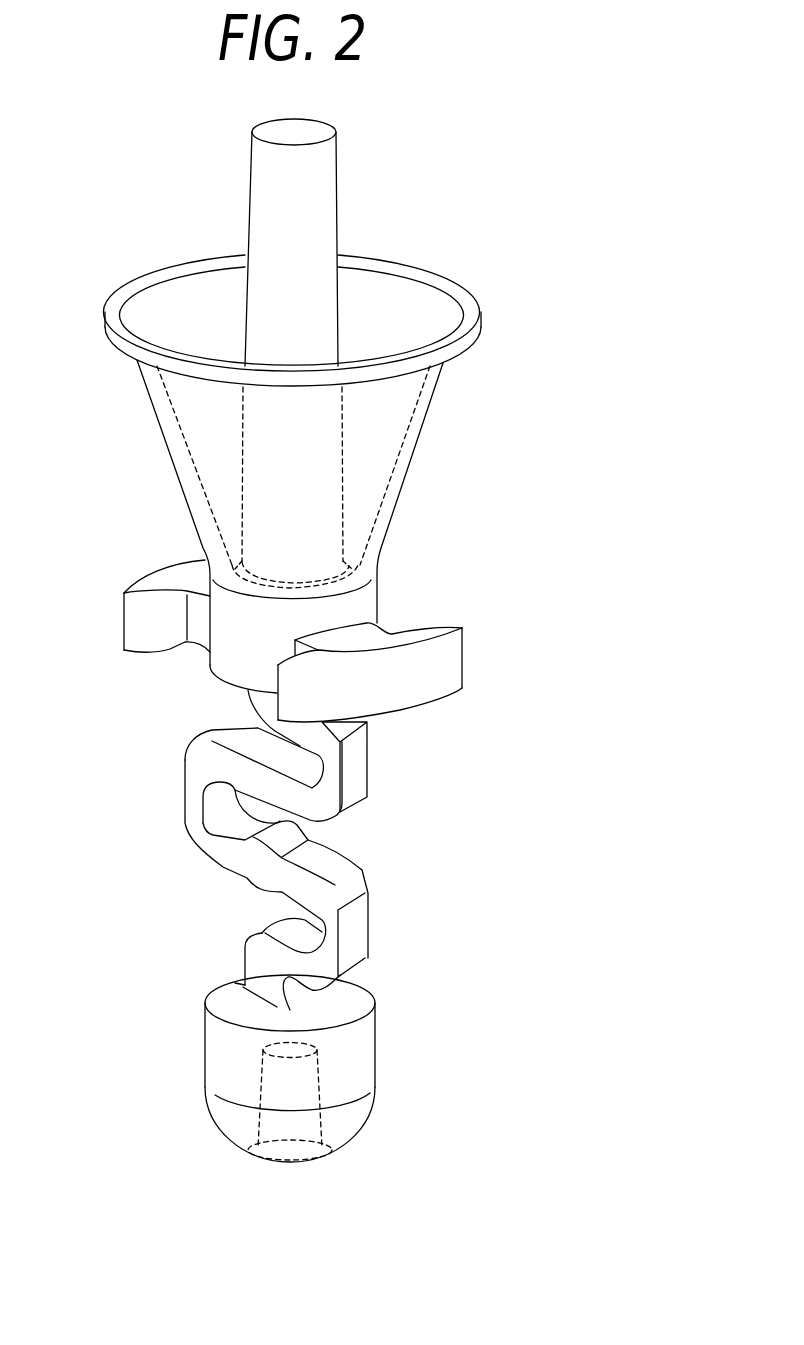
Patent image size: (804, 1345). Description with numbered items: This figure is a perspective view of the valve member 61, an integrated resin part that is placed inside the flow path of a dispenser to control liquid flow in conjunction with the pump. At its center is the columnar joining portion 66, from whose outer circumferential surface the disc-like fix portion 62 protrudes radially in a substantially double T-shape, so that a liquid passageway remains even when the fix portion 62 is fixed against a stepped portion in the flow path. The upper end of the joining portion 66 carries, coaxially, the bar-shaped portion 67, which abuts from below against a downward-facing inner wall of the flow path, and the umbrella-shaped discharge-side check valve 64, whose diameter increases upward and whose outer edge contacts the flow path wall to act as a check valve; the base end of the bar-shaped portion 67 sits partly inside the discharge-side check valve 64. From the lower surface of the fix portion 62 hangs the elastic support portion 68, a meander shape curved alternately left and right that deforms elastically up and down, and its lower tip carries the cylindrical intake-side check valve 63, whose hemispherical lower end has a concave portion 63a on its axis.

The valve member 61 is at (552, 304).
The fix portion 62 is at (123, 614).
The intake-side check valve 63 is at (358, 1060).
The concave portion 63a is at (283, 1072).
The discharge-side check valve 64 is at (388, 425).
The joining portion 66 is at (347, 611).
The bar-shaped portion 67 is at (268, 192).
The elastic support portion 68 is at (358, 877).